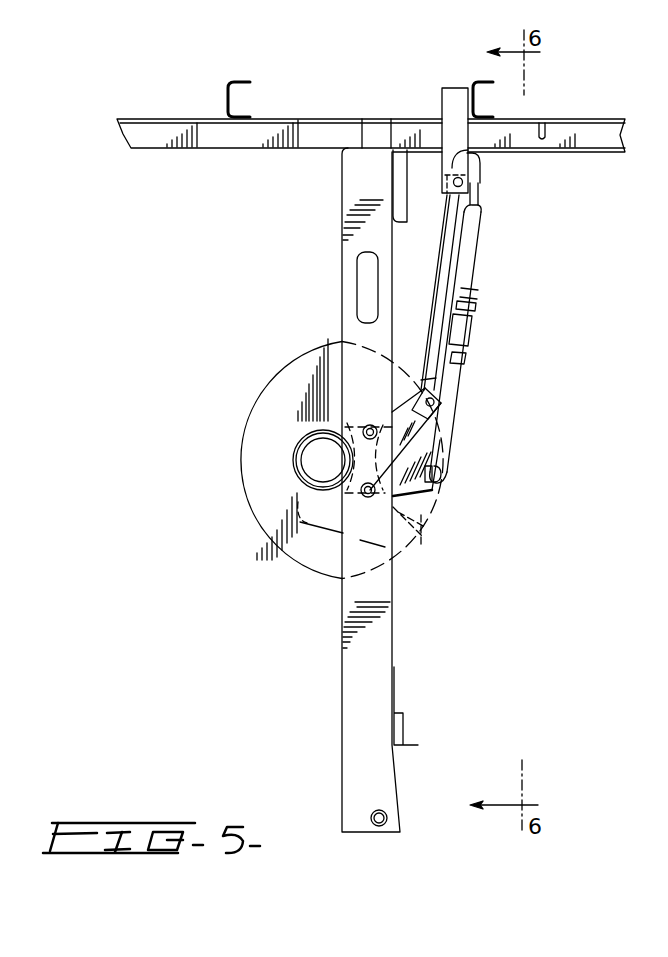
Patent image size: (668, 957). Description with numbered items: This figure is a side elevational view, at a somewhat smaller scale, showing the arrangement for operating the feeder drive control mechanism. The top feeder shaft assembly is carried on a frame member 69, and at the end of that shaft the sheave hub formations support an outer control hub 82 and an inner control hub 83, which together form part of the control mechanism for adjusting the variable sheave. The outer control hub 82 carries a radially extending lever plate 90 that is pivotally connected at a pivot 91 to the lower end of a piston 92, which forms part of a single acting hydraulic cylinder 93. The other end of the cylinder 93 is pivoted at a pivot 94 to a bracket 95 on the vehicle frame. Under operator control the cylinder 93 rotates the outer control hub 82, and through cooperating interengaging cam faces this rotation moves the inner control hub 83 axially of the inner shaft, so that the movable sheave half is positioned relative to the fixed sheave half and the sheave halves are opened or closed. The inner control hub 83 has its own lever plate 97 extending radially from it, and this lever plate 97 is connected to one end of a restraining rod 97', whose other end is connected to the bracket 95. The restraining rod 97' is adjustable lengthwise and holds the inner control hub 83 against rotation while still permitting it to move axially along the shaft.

The frame member 69 is at (393, 627).
The outer control hub 82 is at (285, 473).
The inner control hub 83 is at (295, 450).
The lever plate 90 is at (418, 426).
The pivotal connection 91 is at (436, 400).
The piston 92 is at (432, 386).
The single acting hydraulic cylinder 93 is at (448, 234).
The pivot 94 is at (453, 182).
The bracket 95 is at (455, 115).
The lever plate 97 is at (459, 468).
The restraining rod 97' is at (476, 316).